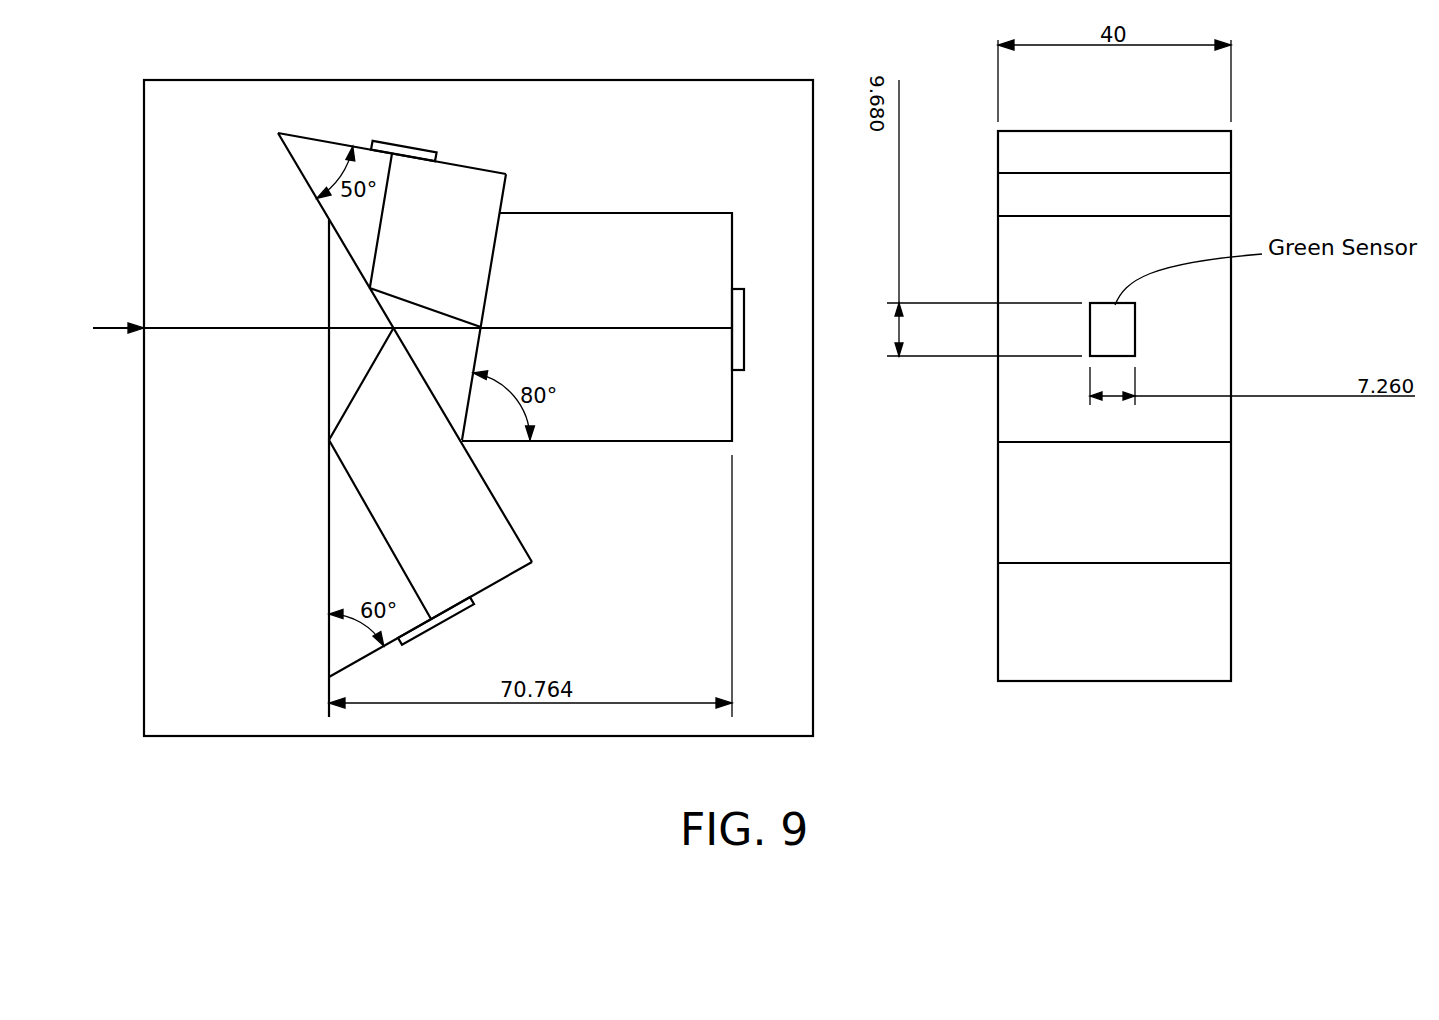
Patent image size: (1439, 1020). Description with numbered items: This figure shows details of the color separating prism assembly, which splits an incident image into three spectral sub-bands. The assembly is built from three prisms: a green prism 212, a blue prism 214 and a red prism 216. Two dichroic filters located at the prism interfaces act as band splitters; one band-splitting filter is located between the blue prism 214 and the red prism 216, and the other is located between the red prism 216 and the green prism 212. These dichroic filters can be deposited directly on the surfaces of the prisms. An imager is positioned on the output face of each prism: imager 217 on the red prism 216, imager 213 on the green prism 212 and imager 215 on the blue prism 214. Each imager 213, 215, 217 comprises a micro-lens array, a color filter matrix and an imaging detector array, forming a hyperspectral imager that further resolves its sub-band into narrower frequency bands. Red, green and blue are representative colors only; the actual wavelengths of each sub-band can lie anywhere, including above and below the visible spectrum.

The green prism 212 is at (560, 212).
The imager 213 is at (745, 323).
The blue prism 214 is at (495, 583).
The imager 215 is at (465, 613).
The red prism 216 is at (325, 141).
The imager 217 is at (413, 142).